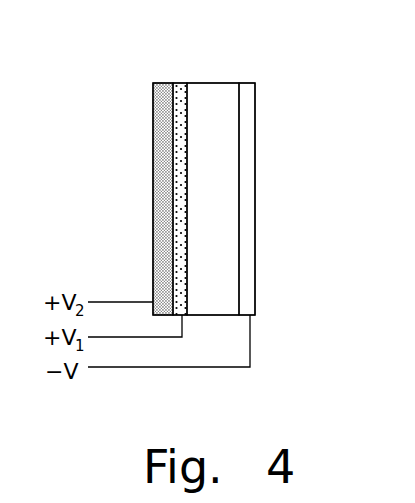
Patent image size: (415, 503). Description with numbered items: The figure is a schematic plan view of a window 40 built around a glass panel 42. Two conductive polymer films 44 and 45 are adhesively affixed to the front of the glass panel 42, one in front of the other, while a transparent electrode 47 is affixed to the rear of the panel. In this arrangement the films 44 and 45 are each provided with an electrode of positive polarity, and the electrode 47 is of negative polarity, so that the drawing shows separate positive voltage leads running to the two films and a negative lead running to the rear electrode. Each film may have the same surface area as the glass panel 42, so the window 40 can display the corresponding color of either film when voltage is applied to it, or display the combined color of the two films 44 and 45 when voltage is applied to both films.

The window 40 is at (292, 150).
The glass panel 42 is at (222, 122).
The conductive polymer film 44 is at (177, 93).
The conductive polymer film 45 is at (165, 93).
The transparent electrode 47 is at (248, 193).